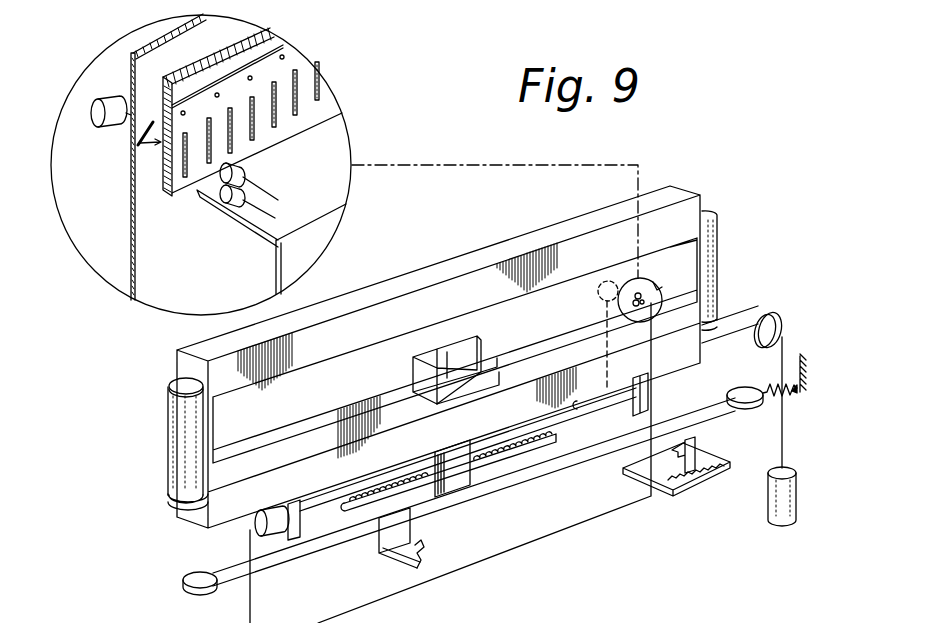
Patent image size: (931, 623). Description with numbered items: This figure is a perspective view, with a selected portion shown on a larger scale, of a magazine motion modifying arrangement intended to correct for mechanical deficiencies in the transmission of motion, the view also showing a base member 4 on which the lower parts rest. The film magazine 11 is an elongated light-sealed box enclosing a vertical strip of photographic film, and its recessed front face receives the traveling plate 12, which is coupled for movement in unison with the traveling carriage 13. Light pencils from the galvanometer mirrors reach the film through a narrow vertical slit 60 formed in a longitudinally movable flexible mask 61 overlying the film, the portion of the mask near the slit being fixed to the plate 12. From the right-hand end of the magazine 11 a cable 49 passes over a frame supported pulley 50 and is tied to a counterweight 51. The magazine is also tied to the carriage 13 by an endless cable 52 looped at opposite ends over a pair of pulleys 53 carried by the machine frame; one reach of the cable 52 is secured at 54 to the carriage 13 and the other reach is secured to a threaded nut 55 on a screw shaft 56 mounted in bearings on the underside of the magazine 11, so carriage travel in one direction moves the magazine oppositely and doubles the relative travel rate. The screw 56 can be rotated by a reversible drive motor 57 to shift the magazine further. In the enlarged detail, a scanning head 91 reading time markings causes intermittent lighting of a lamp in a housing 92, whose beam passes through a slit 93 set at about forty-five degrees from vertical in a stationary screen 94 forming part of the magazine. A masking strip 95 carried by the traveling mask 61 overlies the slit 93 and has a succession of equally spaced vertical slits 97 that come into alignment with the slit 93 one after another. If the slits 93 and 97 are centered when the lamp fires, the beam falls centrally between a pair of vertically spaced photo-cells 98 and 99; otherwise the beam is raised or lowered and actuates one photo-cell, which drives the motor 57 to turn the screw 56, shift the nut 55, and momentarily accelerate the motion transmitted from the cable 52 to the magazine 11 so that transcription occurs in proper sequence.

The base plate 4 is at (690, 484).
The film magazine 11 is at (478, 257).
The traveling plate 12 is at (484, 372).
The traveling carriage 13 is at (425, 550).
The cable 49 is at (694, 343).
The pulley 50 is at (780, 313).
The counterweight 51 is at (777, 493).
The endless cable 52 is at (295, 563).
The pulleys 53 is at (737, 390).
The securing point 54 is at (378, 535).
The threaded nut 55 is at (460, 487).
The screw shaft 56 is at (560, 432).
The drive motor 57 is at (255, 527).
The vertical slit 60 is at (433, 350).
The flexible curtain or mask 61 is at (310, 398).
The scanning head 91 is at (697, 457).
The lamp housing 92 is at (95, 105).
The slit 93 is at (132, 131).
The stationary screen 94 is at (128, 221).
The masking strip 95 is at (297, 62).
The vertical slits 97 is at (316, 96).
The photo-cell 98 is at (240, 207).
The photo-cell 99 is at (244, 174).